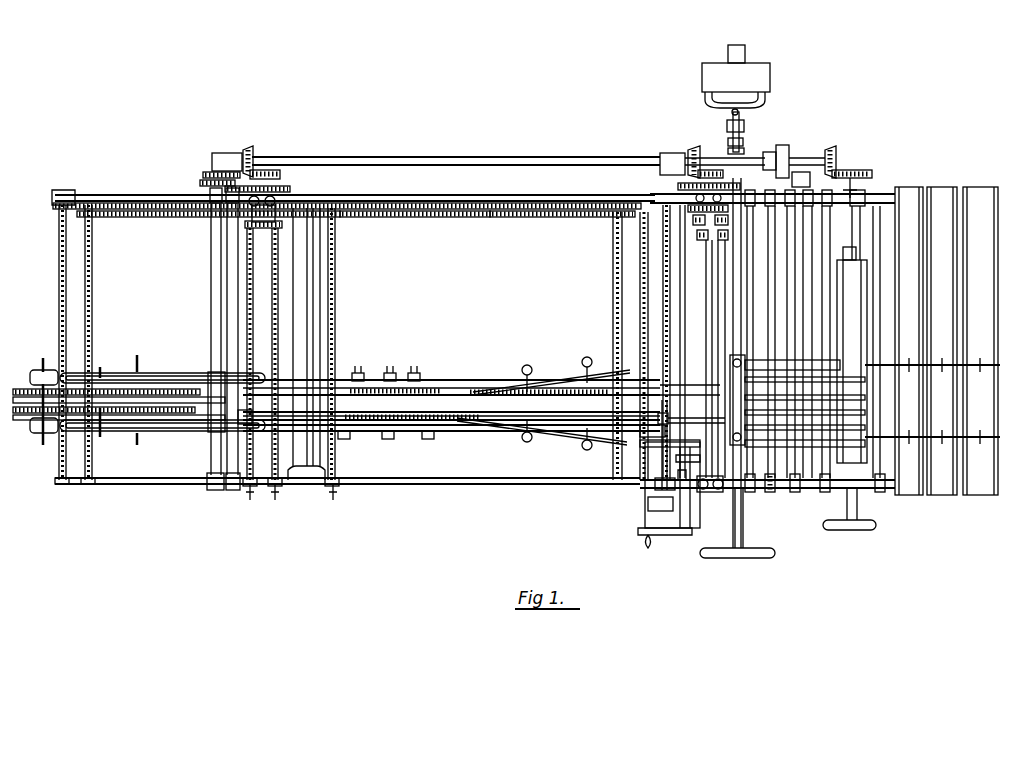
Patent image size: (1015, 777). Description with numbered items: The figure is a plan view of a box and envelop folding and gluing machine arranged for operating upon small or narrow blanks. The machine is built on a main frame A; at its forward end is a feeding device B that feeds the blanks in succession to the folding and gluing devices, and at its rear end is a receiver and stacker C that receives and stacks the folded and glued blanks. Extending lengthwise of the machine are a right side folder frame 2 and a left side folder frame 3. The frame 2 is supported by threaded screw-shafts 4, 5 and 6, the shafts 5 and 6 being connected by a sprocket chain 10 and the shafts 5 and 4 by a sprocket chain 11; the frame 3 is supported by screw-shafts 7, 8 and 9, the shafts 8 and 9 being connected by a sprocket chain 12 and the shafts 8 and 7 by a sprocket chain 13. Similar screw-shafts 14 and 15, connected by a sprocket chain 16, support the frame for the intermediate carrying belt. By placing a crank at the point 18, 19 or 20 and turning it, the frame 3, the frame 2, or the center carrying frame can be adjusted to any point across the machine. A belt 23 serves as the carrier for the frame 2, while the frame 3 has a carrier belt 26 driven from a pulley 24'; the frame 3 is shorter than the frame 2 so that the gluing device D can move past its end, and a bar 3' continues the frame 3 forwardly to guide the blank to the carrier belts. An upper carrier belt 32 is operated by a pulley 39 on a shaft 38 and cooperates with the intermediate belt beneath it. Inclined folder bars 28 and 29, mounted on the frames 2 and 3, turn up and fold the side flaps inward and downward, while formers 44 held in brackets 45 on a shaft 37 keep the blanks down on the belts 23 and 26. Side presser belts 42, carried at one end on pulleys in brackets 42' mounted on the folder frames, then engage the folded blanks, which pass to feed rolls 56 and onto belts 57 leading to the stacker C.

The right side folder frame 2 is at (425, 385).
The left side folder frame 3 is at (451, 445).
The bar 3' is at (691, 414).
The threaded screw-shaft 4 is at (668, 243).
The threaded screw-shaft 5 is at (336, 270).
The threaded screw-shaft 6 is at (90, 278).
The threaded screw-shaft 7 is at (618, 278).
The threaded screw-shaft 8 is at (247, 265).
The threaded screw-shaft 9 is at (60, 280).
The sprocket chain 10 is at (150, 218).
The sprocket chain 11 is at (440, 204).
The sprocket chain 12 is at (122, 205).
The sprocket chain 13 is at (480, 213).
The screw-shaft 14 is at (643, 303).
The screw-shaft 15 is at (336, 306).
The sprocket chain 16 is at (408, 216).
The crank point 18 is at (250, 492).
The crank point 19 is at (278, 492).
The crank point 20 is at (336, 493).
The belt 23 is at (420, 397).
The pulley 24' is at (206, 468).
The carrier belt 26 is at (435, 413).
The inclined folder bar 28 is at (552, 390).
The inclined folder bar 29 is at (570, 430).
The upper carrier belt 32 is at (545, 385).
The shaft 37 is at (663, 458).
The shaft 38 is at (708, 295).
The pulley 39 is at (530, 385).
The side presser belt 42 is at (386, 401).
The bracket 42' is at (361, 360).
The former 44 is at (453, 416).
The bracket 45 is at (660, 420).
The feed roll 56 is at (212, 372).
The belt 57 is at (130, 410).
The main frame A is at (463, 483).
The feeding device B is at (803, 488).
The receiver and stacker C is at (170, 433).
The gluing device D is at (690, 472).